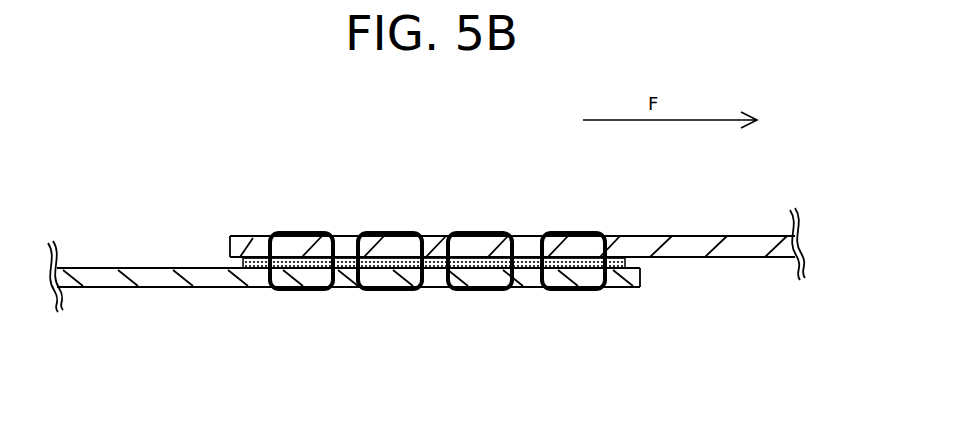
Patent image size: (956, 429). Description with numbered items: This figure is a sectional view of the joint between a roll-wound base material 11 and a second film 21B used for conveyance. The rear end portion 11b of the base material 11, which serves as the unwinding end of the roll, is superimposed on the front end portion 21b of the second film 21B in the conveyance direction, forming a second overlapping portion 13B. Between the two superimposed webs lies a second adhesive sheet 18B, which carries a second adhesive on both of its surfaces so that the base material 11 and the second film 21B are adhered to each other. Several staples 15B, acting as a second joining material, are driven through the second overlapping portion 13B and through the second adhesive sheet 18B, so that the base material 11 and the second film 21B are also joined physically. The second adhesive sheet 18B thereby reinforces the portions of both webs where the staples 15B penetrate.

The base material 11 is at (747, 250).
The rear end portion of the base material 11b is at (438, 236).
The second overlapping portion 13B is at (522, 277).
The staples 15B is at (377, 235).
The second adhesive sheet 18B is at (341, 264).
The second film 21B is at (158, 278).
The front end portion of the second film 21b is at (435, 273).